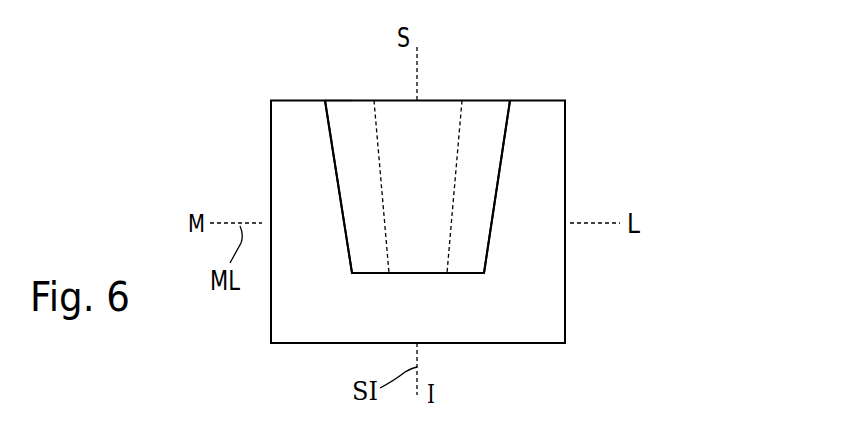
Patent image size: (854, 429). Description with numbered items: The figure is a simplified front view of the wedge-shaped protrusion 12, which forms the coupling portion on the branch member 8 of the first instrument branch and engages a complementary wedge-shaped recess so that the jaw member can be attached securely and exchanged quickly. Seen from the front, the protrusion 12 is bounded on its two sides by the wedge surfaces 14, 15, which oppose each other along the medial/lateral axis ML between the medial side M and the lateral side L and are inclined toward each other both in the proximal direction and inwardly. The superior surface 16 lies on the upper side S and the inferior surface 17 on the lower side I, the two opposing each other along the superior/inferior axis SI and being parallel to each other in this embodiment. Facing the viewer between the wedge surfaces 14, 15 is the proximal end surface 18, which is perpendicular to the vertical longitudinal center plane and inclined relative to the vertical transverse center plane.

The branch member 8 is at (630, 90).
The wedge-shaped protrusion 12 is at (534, 263).
The wedge surface 14 is at (352, 177).
The wedge surface 15 is at (483, 185).
The superior surface 16 is at (351, 98).
The inferior surface 17 is at (400, 276).
The proximal end surface 18 is at (434, 141).